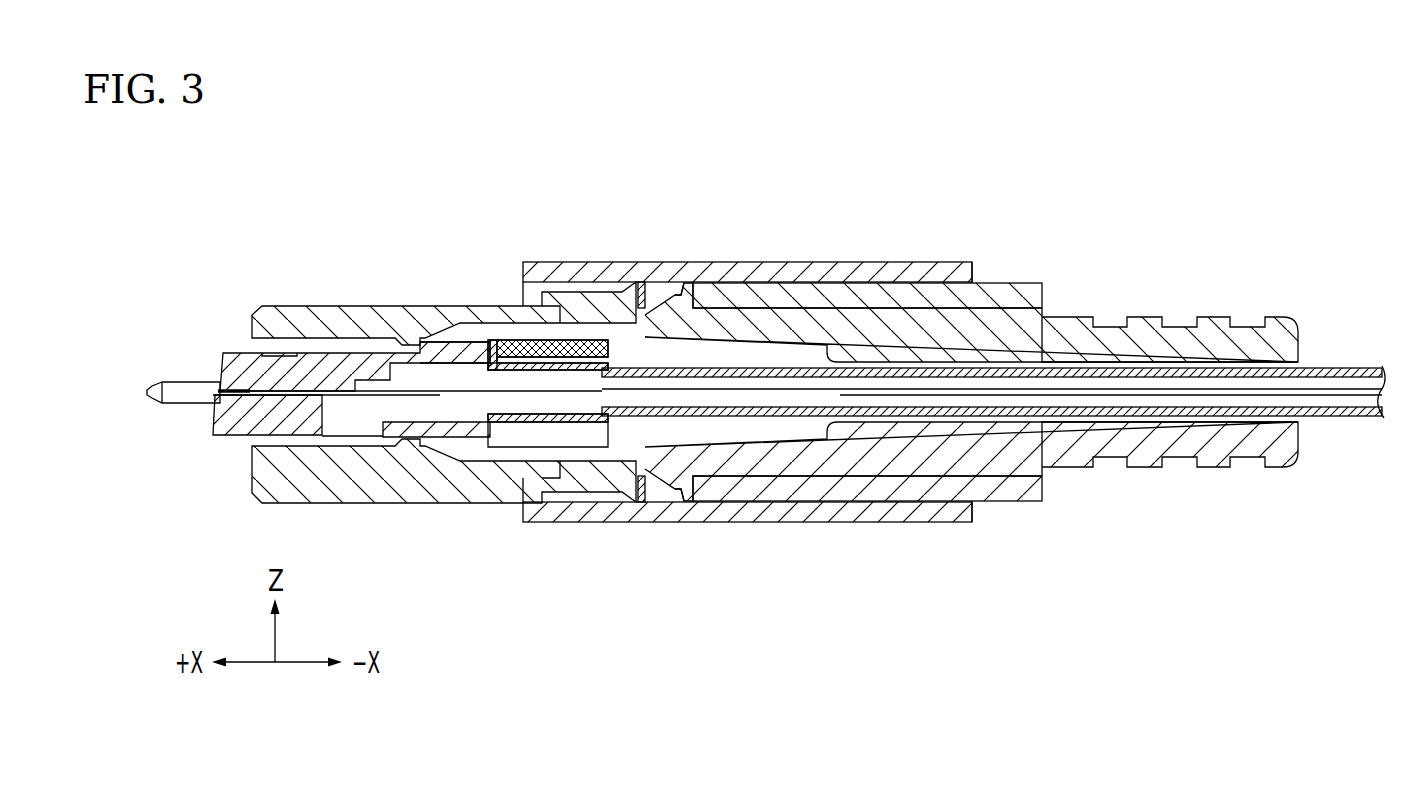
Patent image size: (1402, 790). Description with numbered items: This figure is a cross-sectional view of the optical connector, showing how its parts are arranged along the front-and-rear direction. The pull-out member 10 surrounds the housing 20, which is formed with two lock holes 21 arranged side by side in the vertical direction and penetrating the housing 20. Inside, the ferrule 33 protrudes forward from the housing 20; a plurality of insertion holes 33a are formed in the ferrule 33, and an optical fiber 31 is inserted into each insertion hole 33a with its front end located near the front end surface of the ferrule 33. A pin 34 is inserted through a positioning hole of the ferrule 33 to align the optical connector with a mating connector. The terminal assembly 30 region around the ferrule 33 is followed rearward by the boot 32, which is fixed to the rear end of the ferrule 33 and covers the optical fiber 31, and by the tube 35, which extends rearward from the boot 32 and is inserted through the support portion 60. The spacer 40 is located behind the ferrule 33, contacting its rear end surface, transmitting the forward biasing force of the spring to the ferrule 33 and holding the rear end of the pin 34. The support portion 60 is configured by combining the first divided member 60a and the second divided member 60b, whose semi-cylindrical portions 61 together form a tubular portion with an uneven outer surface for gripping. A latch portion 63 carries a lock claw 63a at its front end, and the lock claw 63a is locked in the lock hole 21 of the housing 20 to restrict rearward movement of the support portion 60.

The pull-out member 10 is at (560, 250).
The housing 20 is at (300, 292).
The lock hole 21 is at (655, 283).
The terminal 30 is at (207, 447).
The optical fiber 31 is at (433, 388).
The boot 32 is at (513, 366).
The ferrule 33 is at (234, 352).
The insertion hole 33a is at (216, 390).
The pin 34 is at (172, 381).
The tube 35 is at (1340, 366).
The spacer 40 is at (515, 460).
The support portion 60 is at (1173, 314).
The first divided member 60a is at (1205, 304).
The second divided member 60b is at (1239, 407).
The semi-cylindrical portion 61 is at (1071, 323).
The latch portion 63 is at (790, 316).
The lock claw 63a is at (682, 296).